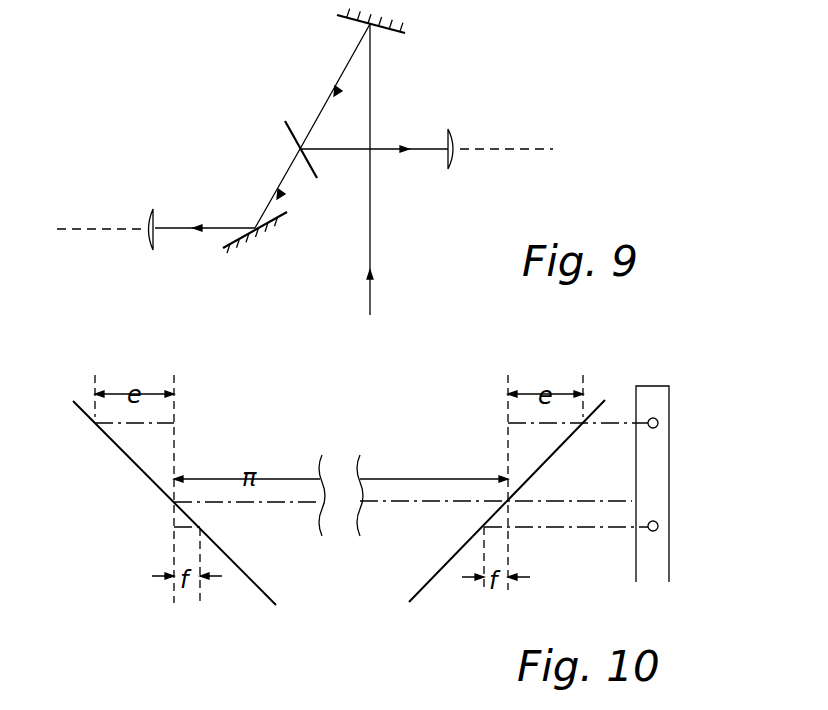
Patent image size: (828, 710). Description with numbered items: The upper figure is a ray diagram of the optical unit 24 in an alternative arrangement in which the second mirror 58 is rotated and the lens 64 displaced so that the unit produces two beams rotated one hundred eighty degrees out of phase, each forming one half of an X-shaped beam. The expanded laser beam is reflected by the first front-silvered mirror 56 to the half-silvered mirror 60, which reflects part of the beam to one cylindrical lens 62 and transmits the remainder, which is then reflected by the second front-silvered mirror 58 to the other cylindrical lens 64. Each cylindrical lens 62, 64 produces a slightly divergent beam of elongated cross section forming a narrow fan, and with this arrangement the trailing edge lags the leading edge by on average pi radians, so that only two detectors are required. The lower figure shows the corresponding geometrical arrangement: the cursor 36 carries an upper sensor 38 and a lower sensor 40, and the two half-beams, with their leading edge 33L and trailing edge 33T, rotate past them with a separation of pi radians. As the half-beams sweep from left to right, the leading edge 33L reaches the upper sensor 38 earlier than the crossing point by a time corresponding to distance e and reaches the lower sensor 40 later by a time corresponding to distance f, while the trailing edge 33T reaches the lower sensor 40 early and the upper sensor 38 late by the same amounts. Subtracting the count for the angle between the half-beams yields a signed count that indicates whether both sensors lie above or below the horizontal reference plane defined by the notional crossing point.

In FIG. 9, the optical unit 24 is at (277, 88).
In FIG. 9, the first front-silvered mirror 56 is at (343, 14).
In FIG. 9, the second front-silvered mirror 58 is at (276, 216).
In FIG. 9, the half-silvered mirror 60 is at (285, 128).
In FIG. 9, the cylindrical lens 62 is at (455, 138).
In FIG. 9, the cylindrical lens 64 is at (149, 216).
In FIG. 10, the trailing edge 33T is at (252, 580).
In FIG. 10, the leading edge 33L is at (440, 568).
In FIG. 10, the cursor 36 is at (660, 465).
In FIG. 10, the light sensor 38 is at (658, 419).
In FIG. 10, the light sensor 40 is at (659, 531).